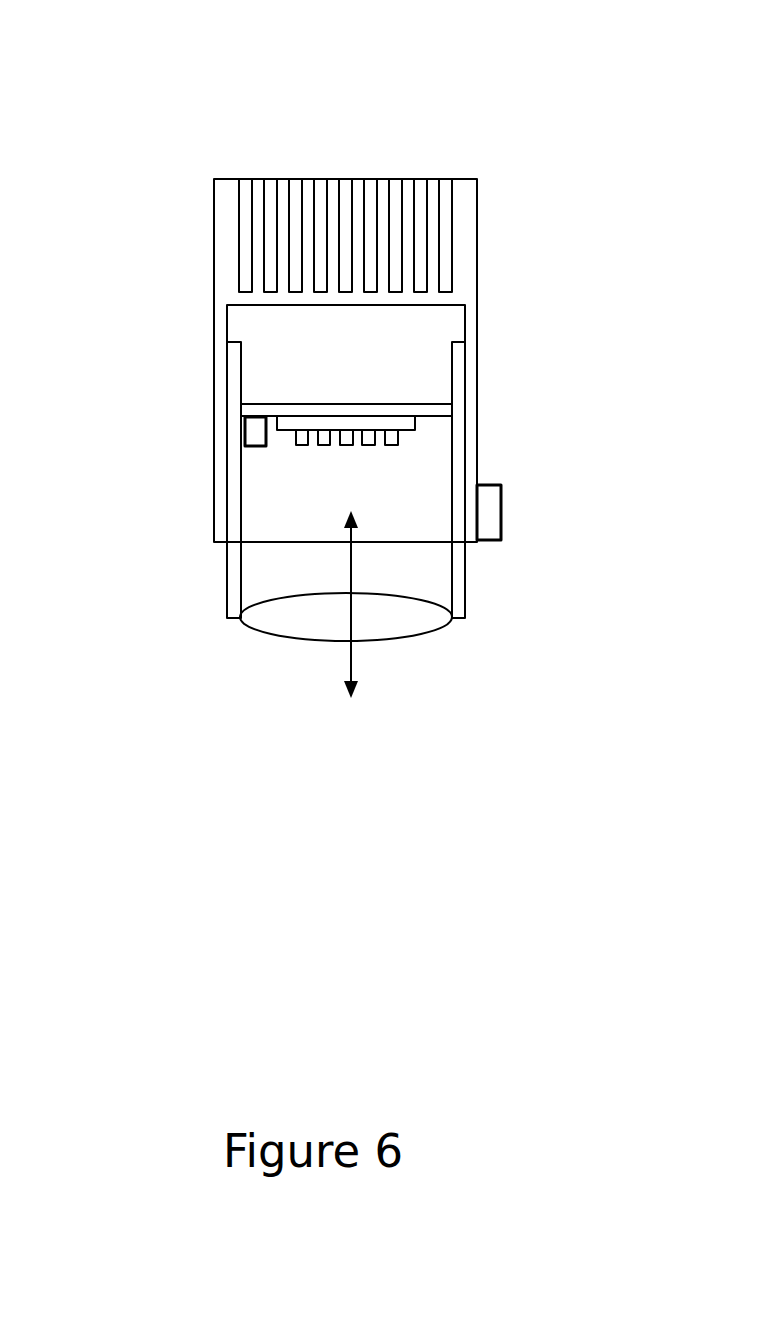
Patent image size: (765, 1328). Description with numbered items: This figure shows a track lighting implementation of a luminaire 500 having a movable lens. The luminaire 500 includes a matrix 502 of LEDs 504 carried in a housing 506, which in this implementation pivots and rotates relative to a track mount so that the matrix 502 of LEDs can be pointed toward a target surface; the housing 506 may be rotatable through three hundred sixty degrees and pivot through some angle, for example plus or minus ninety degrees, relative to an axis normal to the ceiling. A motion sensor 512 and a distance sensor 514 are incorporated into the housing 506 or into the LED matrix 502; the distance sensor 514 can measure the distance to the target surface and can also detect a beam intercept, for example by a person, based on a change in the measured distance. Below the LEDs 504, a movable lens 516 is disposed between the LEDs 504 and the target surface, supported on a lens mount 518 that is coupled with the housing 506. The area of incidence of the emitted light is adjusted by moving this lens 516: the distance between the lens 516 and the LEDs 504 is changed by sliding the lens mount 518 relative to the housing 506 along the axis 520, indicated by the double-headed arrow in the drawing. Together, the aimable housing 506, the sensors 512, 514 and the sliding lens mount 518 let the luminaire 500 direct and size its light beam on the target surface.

The luminaire 500 is at (181, 66).
The matrix of LEDs 502 is at (284, 494).
The LEDs 504 is at (395, 440).
The housing 506 is at (214, 243).
The motion sensor 512 is at (498, 493).
The distance sensor 514 is at (246, 421).
The movable lens 516 is at (263, 622).
The lens mount 518 is at (460, 574).
The axis 520 is at (328, 604).